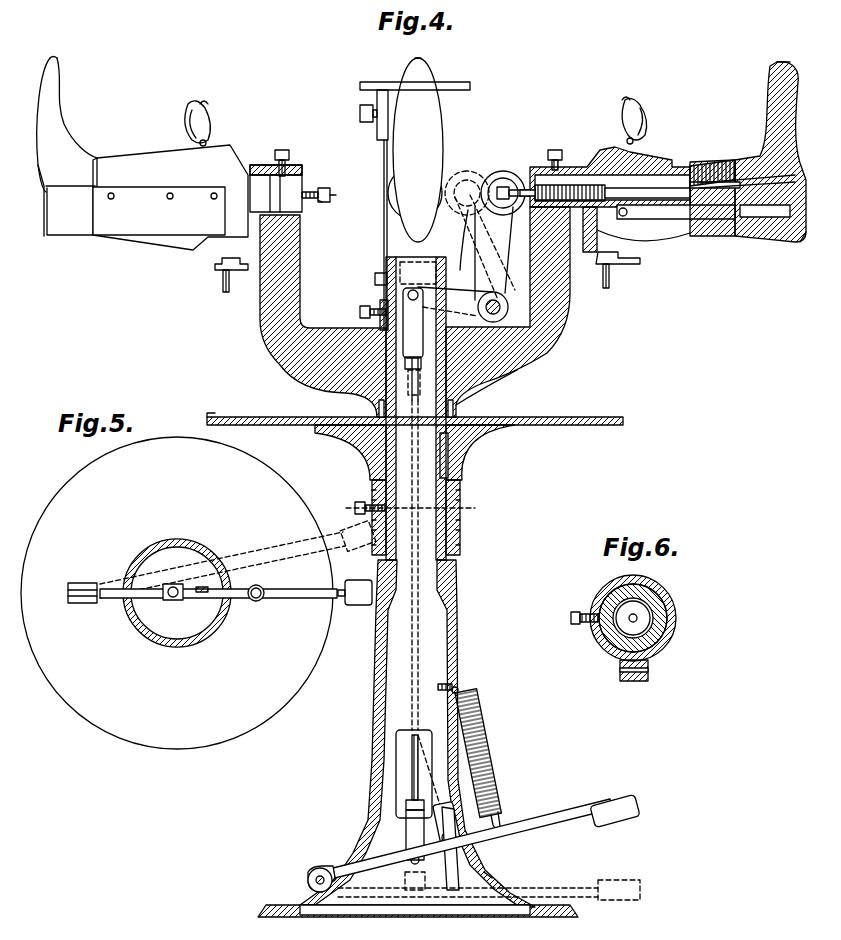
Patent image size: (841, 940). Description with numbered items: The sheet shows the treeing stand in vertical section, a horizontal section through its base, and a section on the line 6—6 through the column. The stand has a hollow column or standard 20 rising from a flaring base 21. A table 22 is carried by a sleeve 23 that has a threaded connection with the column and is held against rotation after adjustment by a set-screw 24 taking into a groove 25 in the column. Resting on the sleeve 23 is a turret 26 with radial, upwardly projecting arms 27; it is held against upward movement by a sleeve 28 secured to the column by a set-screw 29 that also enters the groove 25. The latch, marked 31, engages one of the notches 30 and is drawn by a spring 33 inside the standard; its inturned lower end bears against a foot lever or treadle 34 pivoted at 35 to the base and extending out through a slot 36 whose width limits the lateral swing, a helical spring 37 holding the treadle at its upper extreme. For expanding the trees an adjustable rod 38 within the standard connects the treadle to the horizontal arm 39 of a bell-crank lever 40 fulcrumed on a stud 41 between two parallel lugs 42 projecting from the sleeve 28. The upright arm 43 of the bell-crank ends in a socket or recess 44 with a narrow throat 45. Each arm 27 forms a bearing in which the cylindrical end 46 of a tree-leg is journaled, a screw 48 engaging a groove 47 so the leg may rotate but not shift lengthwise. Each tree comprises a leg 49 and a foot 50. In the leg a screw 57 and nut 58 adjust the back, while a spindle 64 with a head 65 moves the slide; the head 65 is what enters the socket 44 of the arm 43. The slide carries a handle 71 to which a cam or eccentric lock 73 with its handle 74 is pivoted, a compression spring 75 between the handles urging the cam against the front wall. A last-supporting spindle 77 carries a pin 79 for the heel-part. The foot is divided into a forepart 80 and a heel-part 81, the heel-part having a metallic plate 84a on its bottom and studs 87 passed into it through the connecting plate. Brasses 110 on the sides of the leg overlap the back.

In FIG. 4, the section line 6 is at (407, 509).
In FIG. 4, the hollow column or standard 20 is at (458, 660).
In FIG. 5, the hollow column or standard 20 is at (160, 640).
In FIG. 6, the hollow column or standard 20 is at (660, 600).
In FIG. 4, the flaring base 21 is at (273, 905).
In FIG. 5, the flaring base 21 is at (262, 710).
In FIG. 4, the table 22 is at (580, 426).
In FIG. 4, the sleeve 23 is at (462, 468).
In FIG. 6, the sleeve 23 is at (677, 628).
In FIG. 4, the set-screw 24 is at (360, 501).
In FIG. 6, the set-screw 24 is at (571, 618).
In FIG. 4, the groove 25 is at (372, 548).
In FIG. 6, the groove 25 is at (603, 595).
In FIG. 4, the turret 26 is at (362, 380).
In FIG. 4, the arms 27 is at (293, 257).
In FIG. 4, the sleeve 28 is at (450, 270).
In FIG. 4, the set-screw 29 is at (360, 312).
In FIG. 4, the notches 30 is at (455, 410).
In FIG. 4, the link 31 is at (458, 873).
In FIG. 4, the spring 33 is at (473, 832).
In FIG. 4, the foot lever or treadle 34 is at (540, 838).
In FIG. 5, the foot lever or treadle 34 is at (297, 598).
In FIG. 4, the pivot 35 is at (320, 868).
In FIG. 5, the pivot 35 is at (82, 604).
In FIG. 4, the slot 36 is at (488, 877).
In FIG. 5, the slot 36 is at (233, 583).
In FIG. 4, the helical spring 37 is at (492, 752).
In FIG. 5, the helical spring 37 is at (256, 602).
In FIG. 4, the adjustable rod 38 is at (440, 618).
In FIG. 5, the adjustable rod 38 is at (173, 600).
In FIG. 4, the horizontal arm 39 is at (462, 312).
In FIG. 4, the bell-crank lever 40 is at (496, 318).
In FIG. 4, the stud 41 is at (508, 307).
In FIG. 4, the parallel lugs 42 is at (464, 272).
In FIG. 4, the upright arm 43 is at (495, 247).
In FIG. 4, the socket or recess 44 is at (500, 172).
In FIG. 4, the narrow throat 45 is at (428, 165).
In FIG. 4, the cylindrical end 46 is at (425, 185).
In FIG. 4, the groove 47 is at (282, 188).
In FIG. 4, the screw 48 is at (285, 148).
In FIG. 4, the leg 49 is at (170, 193).
In FIG. 4, the foot 50 is at (430, 65).
In FIG. 4, the screw 57 is at (226, 285).
In FIG. 4, the nut 58 is at (215, 268).
In FIG. 4, the spindle 64 is at (336, 195).
In FIG. 4, the head 65 is at (318, 200).
In FIG. 4, the handle 71 is at (205, 112).
In FIG. 4, the cam or eccentric lock 73 is at (197, 143).
In FIG. 4, the handle 74 is at (420, 120).
In FIG. 4, the compression spring 75 is at (192, 110).
In FIG. 4, the last-supporting spindle 77 is at (627, 232).
In FIG. 4, the pin 79 is at (770, 238).
In FIG. 4, the forepart 80 is at (50, 115).
In FIG. 4, the heel-part 81 is at (70, 225).
In FIG. 4, the metallic plate 84a is at (40, 215).
In FIG. 4, the studs 87 is at (780, 186).
In FIG. 4, the brasses 110 is at (150, 222).